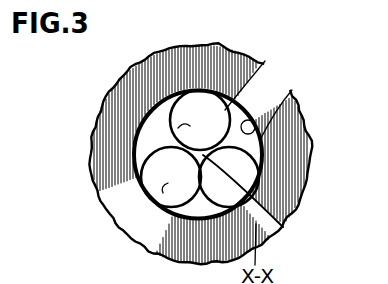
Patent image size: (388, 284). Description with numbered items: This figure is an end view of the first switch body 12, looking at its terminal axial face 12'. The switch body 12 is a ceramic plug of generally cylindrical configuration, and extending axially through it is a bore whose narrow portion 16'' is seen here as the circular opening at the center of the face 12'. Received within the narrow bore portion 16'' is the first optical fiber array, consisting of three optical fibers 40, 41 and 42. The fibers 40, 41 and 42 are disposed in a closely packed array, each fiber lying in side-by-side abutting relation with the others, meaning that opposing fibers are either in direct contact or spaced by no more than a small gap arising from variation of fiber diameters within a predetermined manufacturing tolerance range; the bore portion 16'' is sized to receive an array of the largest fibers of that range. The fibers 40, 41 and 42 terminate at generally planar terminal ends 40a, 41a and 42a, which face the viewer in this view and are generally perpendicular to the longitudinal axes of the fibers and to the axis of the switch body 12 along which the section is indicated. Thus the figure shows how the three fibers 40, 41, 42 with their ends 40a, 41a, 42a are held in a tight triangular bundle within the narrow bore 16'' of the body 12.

The switch body 12 is at (200, 139).
The terminal axial face 12' is at (268, 89).
The narrow bore portion 16'' is at (238, 141).
The optical fiber 40 is at (175, 128).
The terminal end 40a is at (163, 193).
The optical fiber 41 is at (265, 62).
The terminal end 41a is at (178, 128).
The optical fiber 42 is at (260, 149).
The terminal end 42a is at (283, 227).